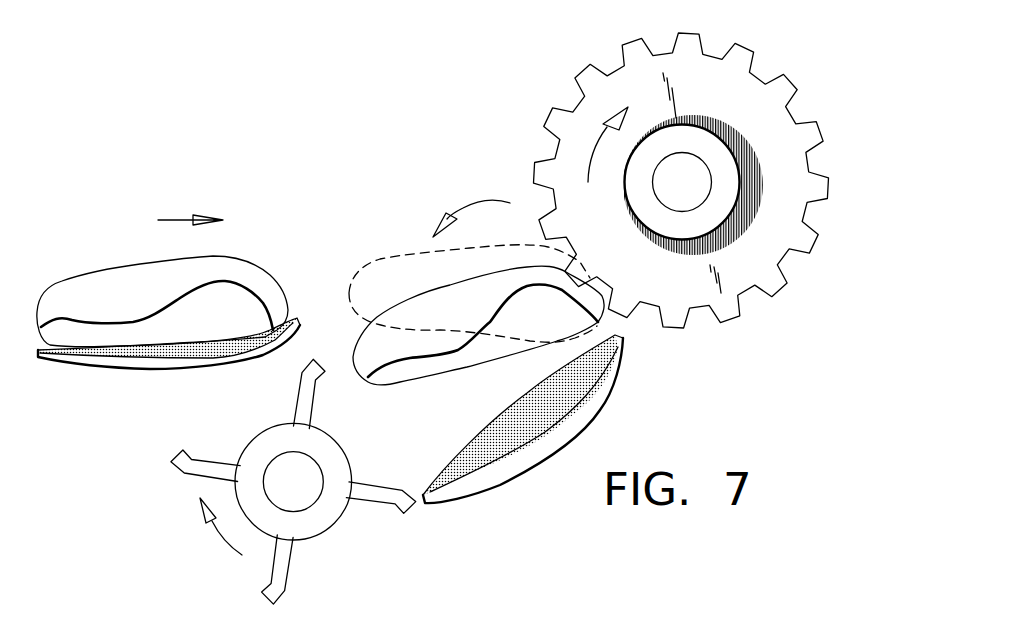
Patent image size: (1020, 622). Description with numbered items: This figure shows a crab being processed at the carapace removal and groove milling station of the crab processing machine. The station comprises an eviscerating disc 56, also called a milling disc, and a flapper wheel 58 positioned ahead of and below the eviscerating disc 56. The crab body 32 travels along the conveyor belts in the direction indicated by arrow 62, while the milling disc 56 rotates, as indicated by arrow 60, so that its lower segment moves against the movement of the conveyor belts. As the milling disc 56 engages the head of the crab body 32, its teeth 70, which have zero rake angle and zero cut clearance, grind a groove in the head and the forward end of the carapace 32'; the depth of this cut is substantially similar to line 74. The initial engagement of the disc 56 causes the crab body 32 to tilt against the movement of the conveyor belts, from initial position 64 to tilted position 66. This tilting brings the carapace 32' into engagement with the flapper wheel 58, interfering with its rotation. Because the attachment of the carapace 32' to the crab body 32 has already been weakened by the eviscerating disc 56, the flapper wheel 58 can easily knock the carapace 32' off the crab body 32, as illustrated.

The crab body 32 is at (327, 410).
The carapace 32' is at (330, 429).
The eviscerating disc 56 is at (753, 121).
The flapper wheel 58 is at (290, 562).
The arrow 60 is at (590, 147).
The arrow 62 is at (173, 220).
The initial position 64 is at (410, 257).
The tilted position 66 is at (407, 307).
The teeth 70 is at (767, 283).
The line 74 is at (238, 280).